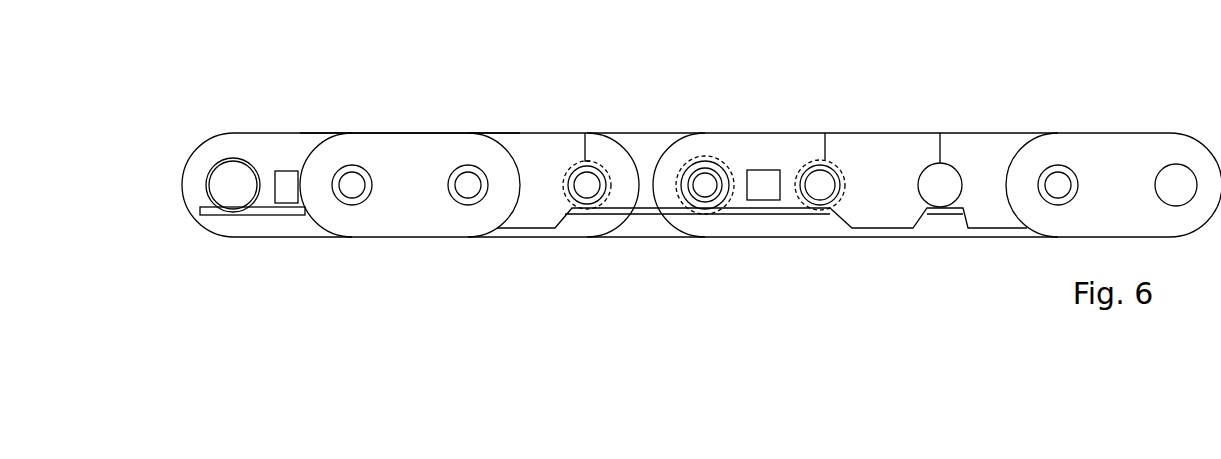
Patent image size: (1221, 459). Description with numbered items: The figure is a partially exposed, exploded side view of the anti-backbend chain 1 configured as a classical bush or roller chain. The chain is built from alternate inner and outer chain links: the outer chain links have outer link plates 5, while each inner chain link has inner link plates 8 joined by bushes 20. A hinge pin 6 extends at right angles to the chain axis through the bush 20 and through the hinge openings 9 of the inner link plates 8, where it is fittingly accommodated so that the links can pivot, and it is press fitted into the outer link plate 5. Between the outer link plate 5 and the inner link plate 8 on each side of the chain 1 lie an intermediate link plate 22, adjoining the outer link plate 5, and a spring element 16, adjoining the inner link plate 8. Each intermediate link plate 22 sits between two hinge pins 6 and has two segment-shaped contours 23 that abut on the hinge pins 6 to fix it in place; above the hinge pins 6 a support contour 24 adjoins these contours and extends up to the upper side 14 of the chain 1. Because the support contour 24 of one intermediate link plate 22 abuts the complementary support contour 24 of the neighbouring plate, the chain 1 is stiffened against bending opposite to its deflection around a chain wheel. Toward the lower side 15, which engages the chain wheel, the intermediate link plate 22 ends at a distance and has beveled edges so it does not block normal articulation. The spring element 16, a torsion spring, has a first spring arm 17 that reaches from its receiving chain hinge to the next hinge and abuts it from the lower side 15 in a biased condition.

The anti-backbend chain 1 is at (177, 126).
The outer link plate 5 is at (1140, 153).
The hinge pin 6 is at (350, 177).
The inner link plate 8 is at (764, 150).
The hinge opening 9 is at (212, 188).
The upper side 14 is at (473, 132).
The lower side 15 is at (532, 232).
The spring element 16 is at (603, 161).
The first spring arm 17 is at (245, 213).
The bush 20 is at (232, 158).
The intermediate link plate 22 is at (538, 147).
The segment-shaped contour 23 is at (826, 212).
The support contour 24 is at (823, 148).